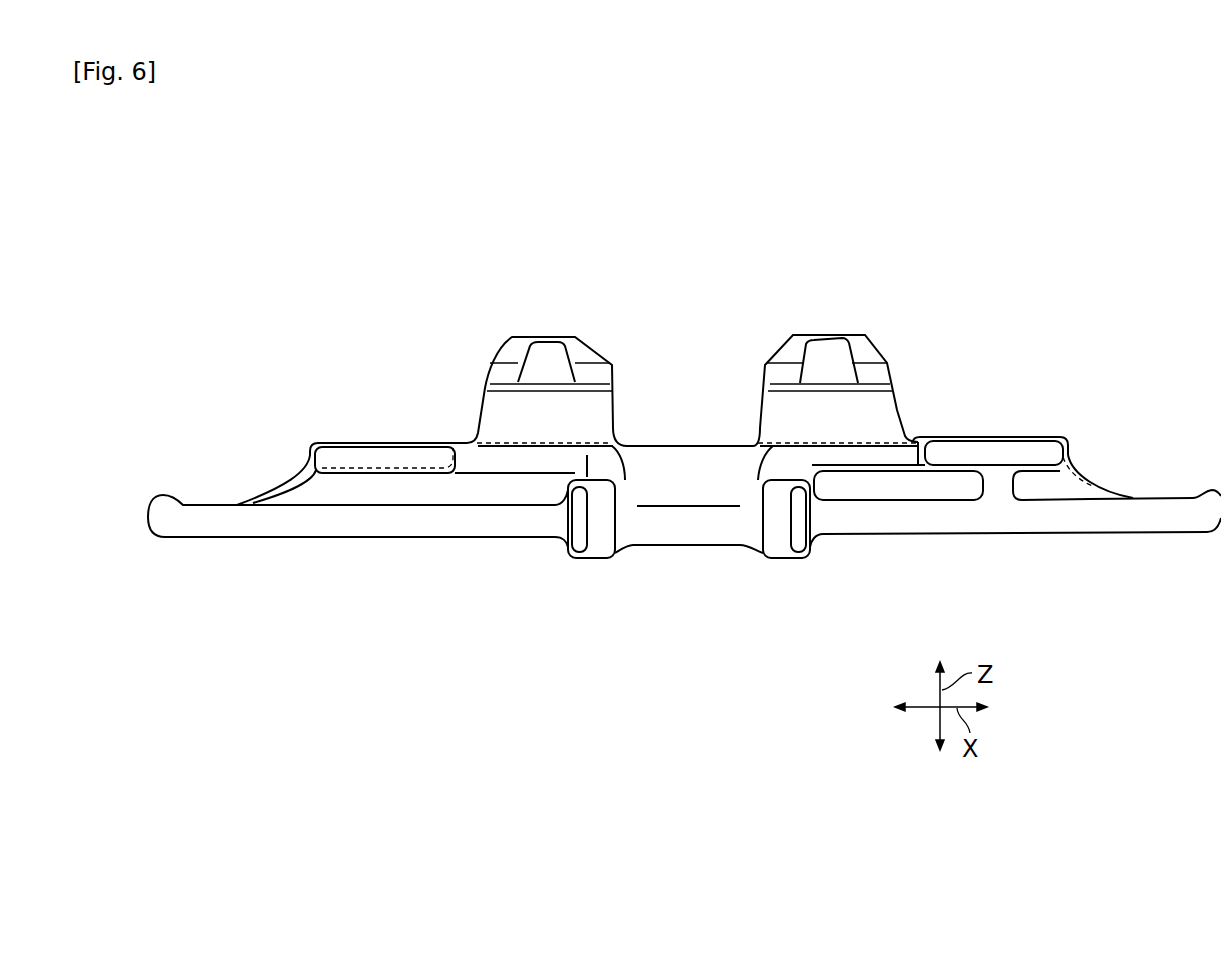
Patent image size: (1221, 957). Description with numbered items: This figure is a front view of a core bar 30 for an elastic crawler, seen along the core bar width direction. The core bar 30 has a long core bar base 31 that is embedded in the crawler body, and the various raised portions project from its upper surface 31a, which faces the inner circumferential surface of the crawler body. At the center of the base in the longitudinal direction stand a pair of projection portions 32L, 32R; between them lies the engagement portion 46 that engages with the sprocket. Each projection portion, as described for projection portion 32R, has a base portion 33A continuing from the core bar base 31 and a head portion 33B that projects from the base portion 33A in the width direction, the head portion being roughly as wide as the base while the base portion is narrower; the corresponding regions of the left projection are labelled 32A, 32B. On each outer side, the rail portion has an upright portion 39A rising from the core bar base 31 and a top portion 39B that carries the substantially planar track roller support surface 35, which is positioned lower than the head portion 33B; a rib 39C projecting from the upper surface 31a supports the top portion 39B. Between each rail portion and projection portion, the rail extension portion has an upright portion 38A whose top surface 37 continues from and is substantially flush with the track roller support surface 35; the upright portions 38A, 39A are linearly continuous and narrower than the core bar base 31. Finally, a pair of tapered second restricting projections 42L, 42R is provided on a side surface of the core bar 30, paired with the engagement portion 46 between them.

The core bar 30 is at (1085, 291).
The core bar base 31 is at (1171, 507).
The upper surface 31a is at (1103, 472).
The projection portion 32L is at (572, 336).
The projection portion 32R is at (855, 334).
The lower portion of left protrusion 32A is at (592, 417).
The upper portion of left protrusion 32B is at (590, 354).
The base portion 33A is at (770, 415).
The head portion 33B is at (788, 355).
The track roller support surface 35 is at (357, 442).
The top surface 37 is at (459, 440).
The upright portion 38A is at (463, 488).
The upright portion 39A is at (381, 487).
The top portion 39B is at (1037, 450).
The rib 39C is at (997, 487).
The second restricting projection 42L is at (603, 537).
The second restricting projection 42R is at (778, 537).
The engagement portion 46 is at (697, 445).